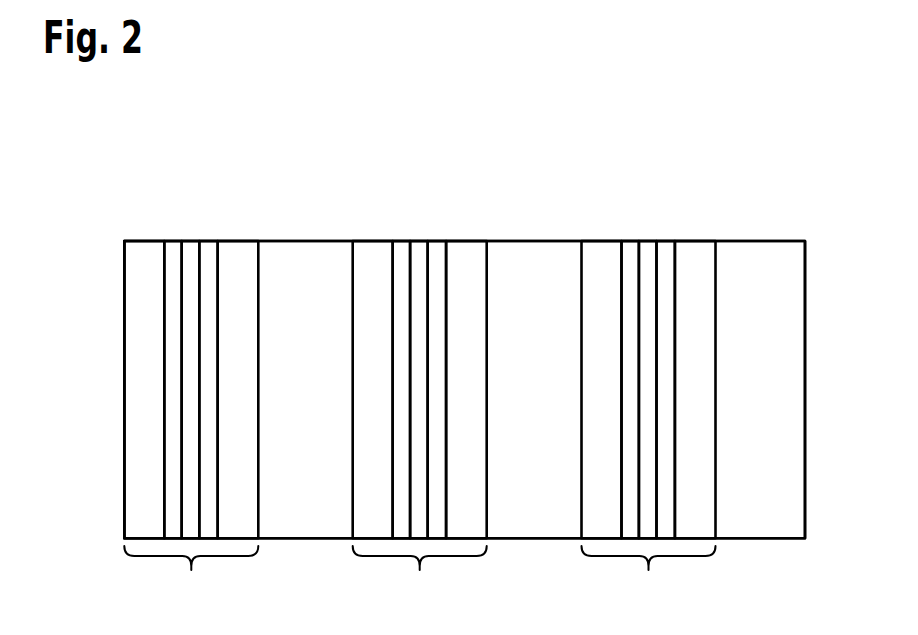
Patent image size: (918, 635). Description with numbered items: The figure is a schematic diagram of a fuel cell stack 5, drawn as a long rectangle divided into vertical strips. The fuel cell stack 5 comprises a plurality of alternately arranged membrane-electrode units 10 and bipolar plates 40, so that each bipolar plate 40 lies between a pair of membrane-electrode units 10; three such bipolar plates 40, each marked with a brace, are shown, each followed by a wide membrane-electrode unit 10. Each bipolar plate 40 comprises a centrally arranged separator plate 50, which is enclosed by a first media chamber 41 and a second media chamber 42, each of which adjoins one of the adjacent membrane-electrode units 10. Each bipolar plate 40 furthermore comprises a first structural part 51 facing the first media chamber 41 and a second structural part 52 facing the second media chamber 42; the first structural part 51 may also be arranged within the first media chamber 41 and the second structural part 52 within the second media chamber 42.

The fuel cell stack 5 is at (105, 173).
The membrane-electrode unit 10 is at (306, 253).
The bipolar plate 40 is at (419, 577).
The first media chamber 41 is at (142, 253).
The second media chamber 42 is at (237, 253).
The separator plate 50 is at (190, 253).
The first structural part 51 is at (175, 253).
The second structural part 52 is at (210, 253).